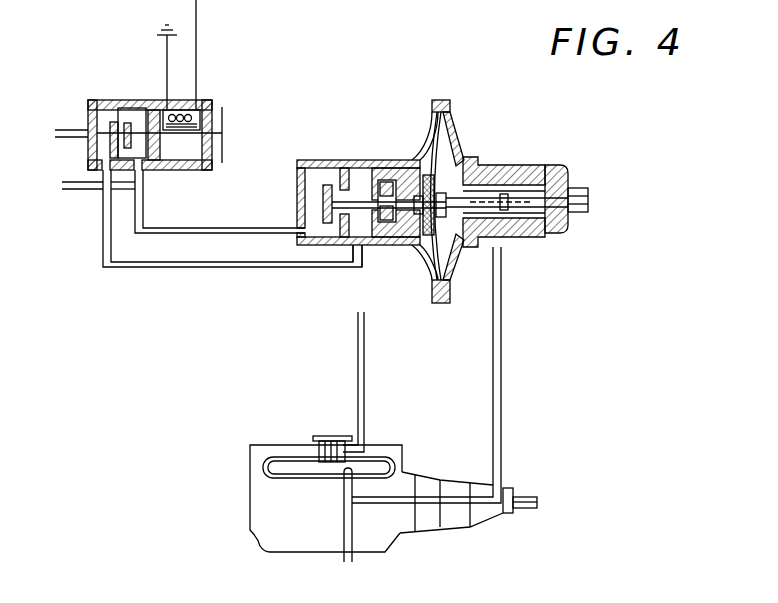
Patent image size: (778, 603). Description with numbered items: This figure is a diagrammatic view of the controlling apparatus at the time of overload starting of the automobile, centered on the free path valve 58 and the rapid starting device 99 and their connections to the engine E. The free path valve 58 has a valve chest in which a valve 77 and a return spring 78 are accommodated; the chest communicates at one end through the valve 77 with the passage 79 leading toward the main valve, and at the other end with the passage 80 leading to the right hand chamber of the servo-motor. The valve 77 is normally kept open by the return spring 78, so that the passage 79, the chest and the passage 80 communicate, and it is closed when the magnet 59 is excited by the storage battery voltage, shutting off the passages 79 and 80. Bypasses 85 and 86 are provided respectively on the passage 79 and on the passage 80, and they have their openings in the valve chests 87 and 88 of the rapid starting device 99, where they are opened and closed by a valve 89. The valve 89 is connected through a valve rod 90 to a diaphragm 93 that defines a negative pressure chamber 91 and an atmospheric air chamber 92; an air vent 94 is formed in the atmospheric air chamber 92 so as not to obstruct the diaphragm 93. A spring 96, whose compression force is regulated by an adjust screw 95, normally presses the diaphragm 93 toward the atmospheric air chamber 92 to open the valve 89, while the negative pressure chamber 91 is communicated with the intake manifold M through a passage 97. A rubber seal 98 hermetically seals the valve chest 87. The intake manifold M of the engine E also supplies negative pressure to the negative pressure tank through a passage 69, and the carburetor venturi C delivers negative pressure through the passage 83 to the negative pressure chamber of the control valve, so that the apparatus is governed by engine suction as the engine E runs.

The free path valve 58 is at (208, 100).
The magnet 59 is at (188, 108).
The valve 77 is at (122, 126).
The return spring 78 is at (136, 112).
The passage 79 is at (66, 128).
The passage 80 is at (74, 190).
The passage 83 is at (357, 350).
The bypass 85 is at (173, 268).
The bypass 86 is at (194, 229).
The valve chest 87 is at (366, 240).
The valve chest 88 is at (312, 176).
The valve 89 is at (321, 212).
The valve rod 90 is at (356, 200).
The negative pressure chamber 91 is at (456, 158).
The atmospheric air chamber 92 is at (428, 160).
The diaphragm 93 is at (450, 140).
The air vent 94 is at (424, 262).
The adjust screw 95 is at (583, 213).
The spring 96 is at (508, 216).
The passage 97 is at (502, 362).
The rubber seal 98 is at (386, 181).
The rapid starting device 99 is at (440, 303).
The carburetor venturi C is at (330, 438).
The engine intake manifold M is at (290, 460).
The engine E is at (250, 496).
The passage 69 is at (344, 548).